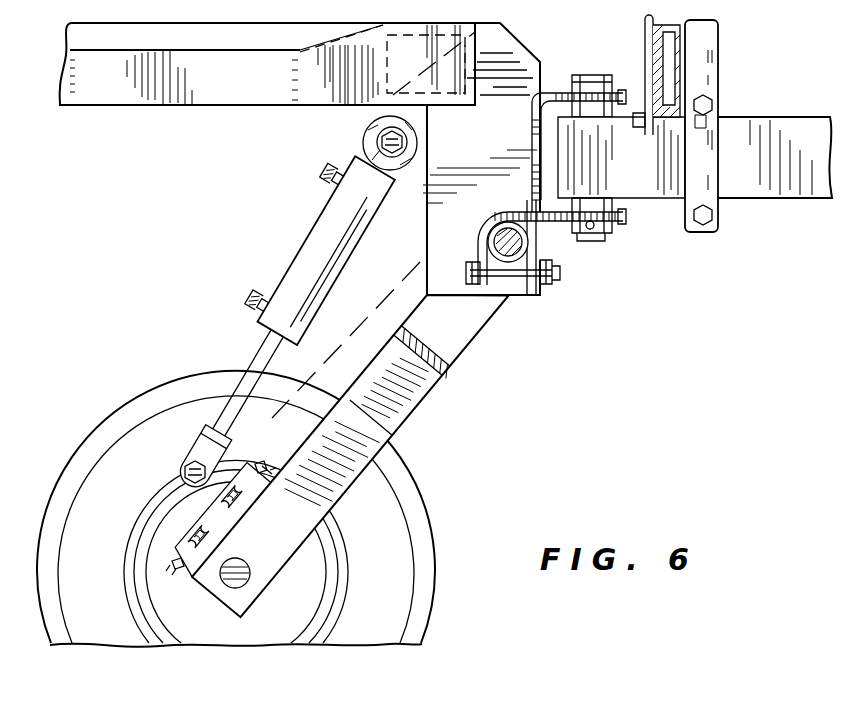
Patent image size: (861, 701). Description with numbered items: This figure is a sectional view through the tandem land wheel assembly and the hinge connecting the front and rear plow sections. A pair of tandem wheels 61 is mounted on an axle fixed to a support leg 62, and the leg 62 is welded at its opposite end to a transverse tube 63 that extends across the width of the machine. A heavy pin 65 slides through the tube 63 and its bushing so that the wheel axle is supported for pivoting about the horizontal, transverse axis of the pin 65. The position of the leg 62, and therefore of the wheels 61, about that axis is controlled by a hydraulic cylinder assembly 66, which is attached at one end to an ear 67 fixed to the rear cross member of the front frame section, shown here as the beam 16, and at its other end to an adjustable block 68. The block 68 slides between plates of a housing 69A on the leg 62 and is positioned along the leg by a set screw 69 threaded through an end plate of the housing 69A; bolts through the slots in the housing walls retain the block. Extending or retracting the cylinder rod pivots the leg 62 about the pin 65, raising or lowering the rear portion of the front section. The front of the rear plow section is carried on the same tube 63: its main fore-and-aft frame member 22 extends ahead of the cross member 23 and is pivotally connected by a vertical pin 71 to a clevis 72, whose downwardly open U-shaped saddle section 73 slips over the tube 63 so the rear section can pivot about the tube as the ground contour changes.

The support beam 16 is at (93, 88).
The main fore and aft frame member 22 is at (783, 128).
The cross member 23 is at (647, 33).
The tandem wheels 61 is at (387, 517).
The support leg 62 is at (423, 392).
The tube 63 is at (540, 250).
The pin 65 is at (522, 280).
The hydraulic cylinder assembly 66 is at (290, 242).
The ear 67 is at (364, 126).
The adjustable block 68 is at (178, 488).
The set screw 69 is at (262, 466).
The housing 69A is at (203, 513).
The vertical pin 71 is at (607, 238).
The clevis 72 is at (547, 96).
The saddle section 73 is at (489, 194).